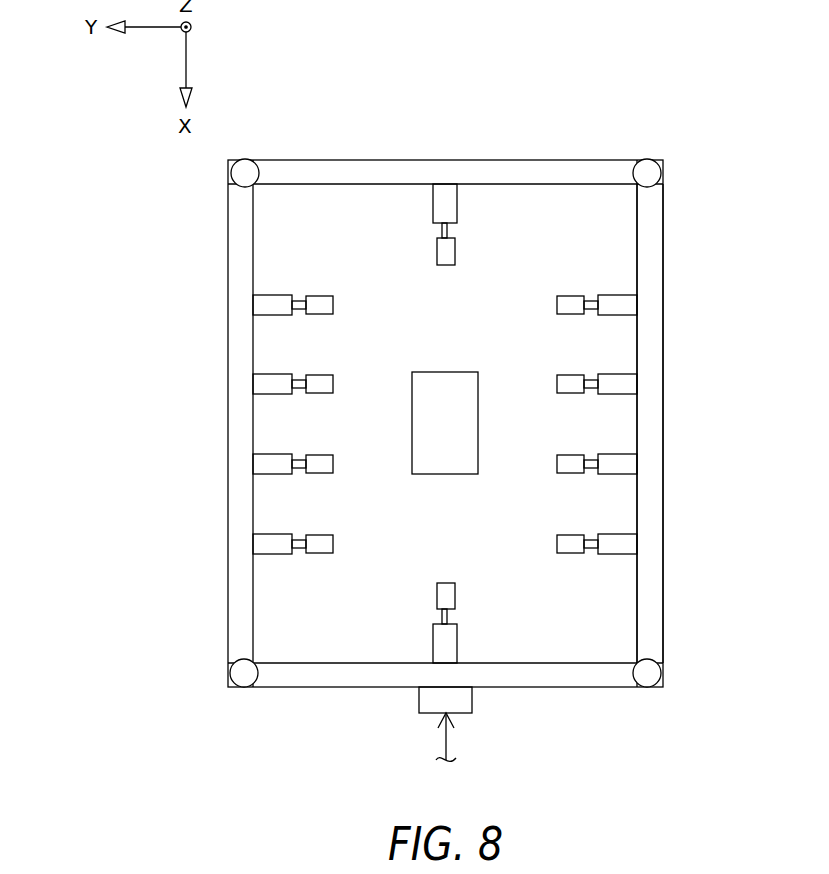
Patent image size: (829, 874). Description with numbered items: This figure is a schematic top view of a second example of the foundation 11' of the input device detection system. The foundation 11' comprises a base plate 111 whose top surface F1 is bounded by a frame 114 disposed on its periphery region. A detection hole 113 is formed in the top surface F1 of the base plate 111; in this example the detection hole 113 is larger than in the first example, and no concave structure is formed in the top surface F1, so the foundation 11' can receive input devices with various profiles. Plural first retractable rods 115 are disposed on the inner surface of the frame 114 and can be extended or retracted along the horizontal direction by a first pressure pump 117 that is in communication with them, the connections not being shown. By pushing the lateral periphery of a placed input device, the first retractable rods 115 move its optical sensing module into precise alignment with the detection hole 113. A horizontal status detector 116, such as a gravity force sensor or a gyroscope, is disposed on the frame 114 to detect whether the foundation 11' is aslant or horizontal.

The foundation 11' is at (445, 389).
The base plate 111 is at (313, 212).
The detection hole 113 is at (423, 415).
The frame 114 is at (650, 349).
The first retractable rods 115 is at (263, 385).
The horizontal status detector 116 is at (240, 176).
The first pressure pump 117 is at (420, 704).
The top surface F1 is at (575, 222).